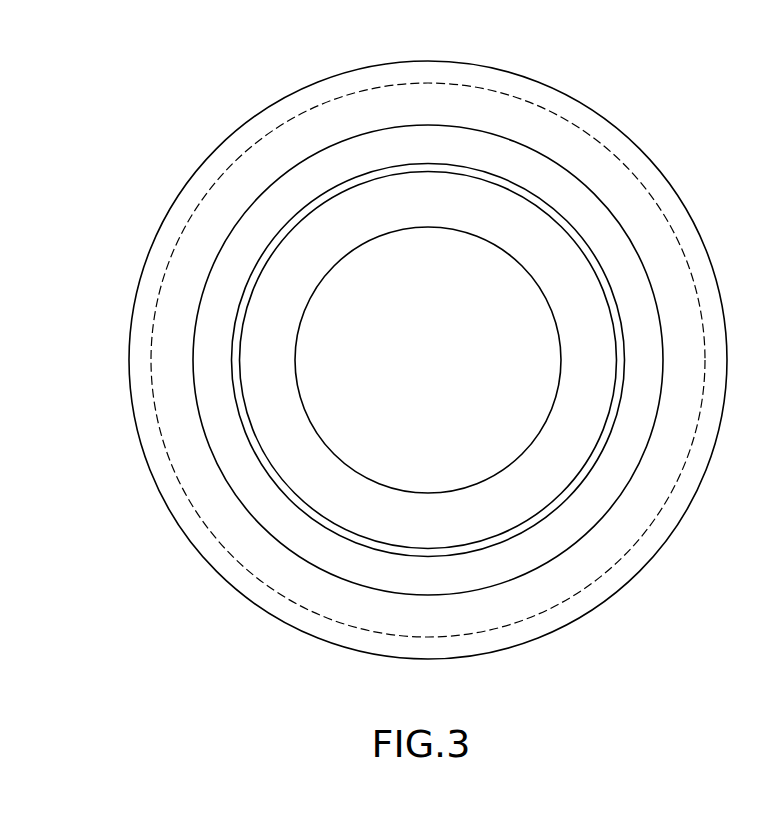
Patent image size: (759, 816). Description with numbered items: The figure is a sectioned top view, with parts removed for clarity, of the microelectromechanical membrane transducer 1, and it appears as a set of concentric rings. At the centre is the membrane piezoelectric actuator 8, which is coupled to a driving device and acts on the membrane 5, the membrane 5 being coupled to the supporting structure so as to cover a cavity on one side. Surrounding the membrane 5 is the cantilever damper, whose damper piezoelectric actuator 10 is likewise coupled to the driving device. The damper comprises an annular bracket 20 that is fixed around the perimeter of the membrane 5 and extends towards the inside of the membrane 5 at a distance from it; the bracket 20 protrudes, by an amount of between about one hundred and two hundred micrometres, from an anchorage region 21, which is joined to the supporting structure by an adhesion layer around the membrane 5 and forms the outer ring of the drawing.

The microelectromechanical membrane transducer 1 is at (428, 345).
The membrane 5 is at (570, 428).
The membrane piezoelectric actuator 8 is at (419, 372).
The damper piezoelectric actuator 10 is at (563, 537).
The bracket 20 is at (595, 162).
The anchorage region 21 is at (243, 598).